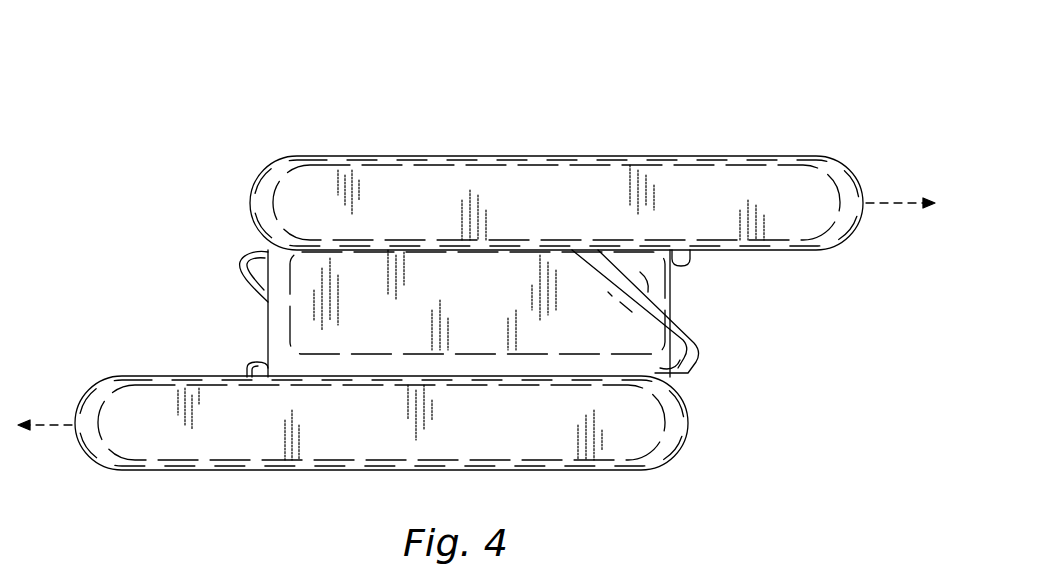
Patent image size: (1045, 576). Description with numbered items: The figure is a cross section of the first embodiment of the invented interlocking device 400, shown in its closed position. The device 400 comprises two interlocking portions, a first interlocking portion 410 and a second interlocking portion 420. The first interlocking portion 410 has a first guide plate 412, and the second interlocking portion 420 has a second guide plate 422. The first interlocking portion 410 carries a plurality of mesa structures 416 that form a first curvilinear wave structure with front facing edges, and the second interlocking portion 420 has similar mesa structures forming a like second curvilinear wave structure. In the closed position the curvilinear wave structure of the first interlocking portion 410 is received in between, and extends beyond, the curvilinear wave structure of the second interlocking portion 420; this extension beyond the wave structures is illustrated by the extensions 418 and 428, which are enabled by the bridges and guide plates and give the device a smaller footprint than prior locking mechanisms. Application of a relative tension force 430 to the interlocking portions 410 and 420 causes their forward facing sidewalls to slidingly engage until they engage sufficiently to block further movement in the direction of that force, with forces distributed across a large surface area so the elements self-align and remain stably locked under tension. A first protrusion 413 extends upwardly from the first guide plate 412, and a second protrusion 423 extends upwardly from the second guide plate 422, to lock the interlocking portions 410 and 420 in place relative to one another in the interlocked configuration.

The device 400 is at (258, 68).
The first interlocking portion 410 is at (228, 135).
The first guide plate 412 is at (283, 180).
The first protrusion 413 is at (690, 264).
The mesa structures 416 is at (490, 290).
The extension 418 is at (240, 265).
The second interlocking portion 420 is at (740, 472).
The second guide plate 422 is at (167, 463).
The second protrusion 423 is at (250, 363).
The extension 428 is at (700, 358).
The relative tension force 430 is at (897, 202).